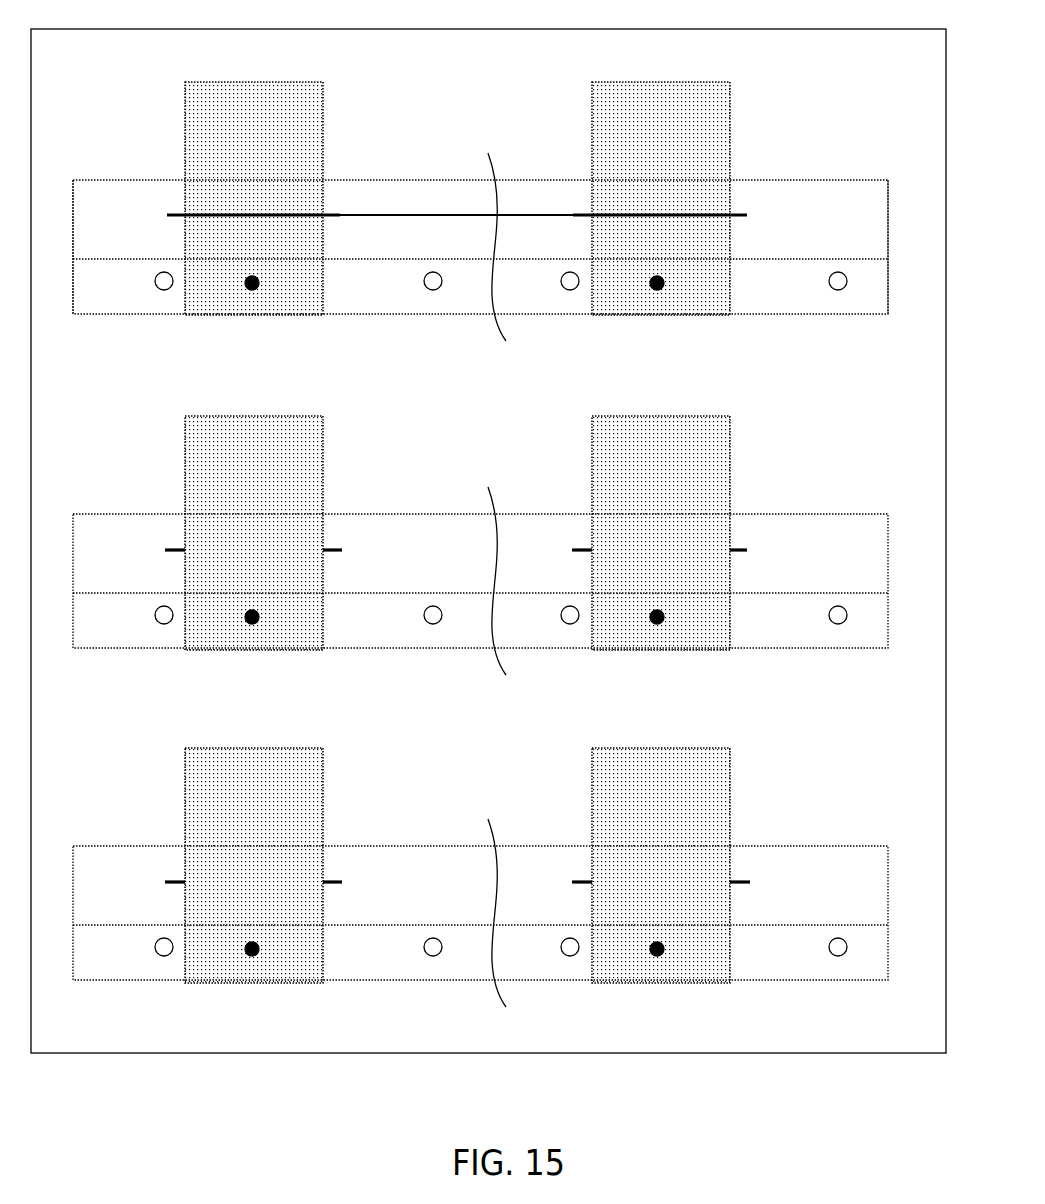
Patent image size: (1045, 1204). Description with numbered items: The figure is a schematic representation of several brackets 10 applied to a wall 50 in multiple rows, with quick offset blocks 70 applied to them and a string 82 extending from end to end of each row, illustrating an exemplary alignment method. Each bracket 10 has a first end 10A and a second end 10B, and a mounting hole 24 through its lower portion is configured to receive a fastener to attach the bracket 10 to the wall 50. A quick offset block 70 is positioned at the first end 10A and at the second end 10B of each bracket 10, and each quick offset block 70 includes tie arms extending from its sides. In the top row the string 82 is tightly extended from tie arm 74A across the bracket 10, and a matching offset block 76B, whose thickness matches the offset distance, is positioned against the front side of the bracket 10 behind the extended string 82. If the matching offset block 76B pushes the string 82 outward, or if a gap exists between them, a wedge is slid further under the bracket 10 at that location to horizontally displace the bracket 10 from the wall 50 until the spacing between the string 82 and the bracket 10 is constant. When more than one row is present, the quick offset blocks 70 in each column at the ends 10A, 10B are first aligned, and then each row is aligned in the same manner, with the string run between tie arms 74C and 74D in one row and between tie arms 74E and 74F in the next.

The bracket 10 is at (772, 314).
The first end of the bracket 10A is at (75, 315).
The second end of the bracket 10B is at (888, 314).
The mounting hole 24 is at (433, 286).
The wall 50 is at (796, 713).
The quick offset block 70 is at (313, 83).
The tie arm 74A is at (170, 214).
The tie arm 74C is at (178, 548).
The tie arm 74D is at (740, 548).
The tie arm 74E is at (175, 880).
The tie arm 74F is at (745, 880).
The matching offset block 76B is at (747, 214).
The string 82 is at (438, 215).